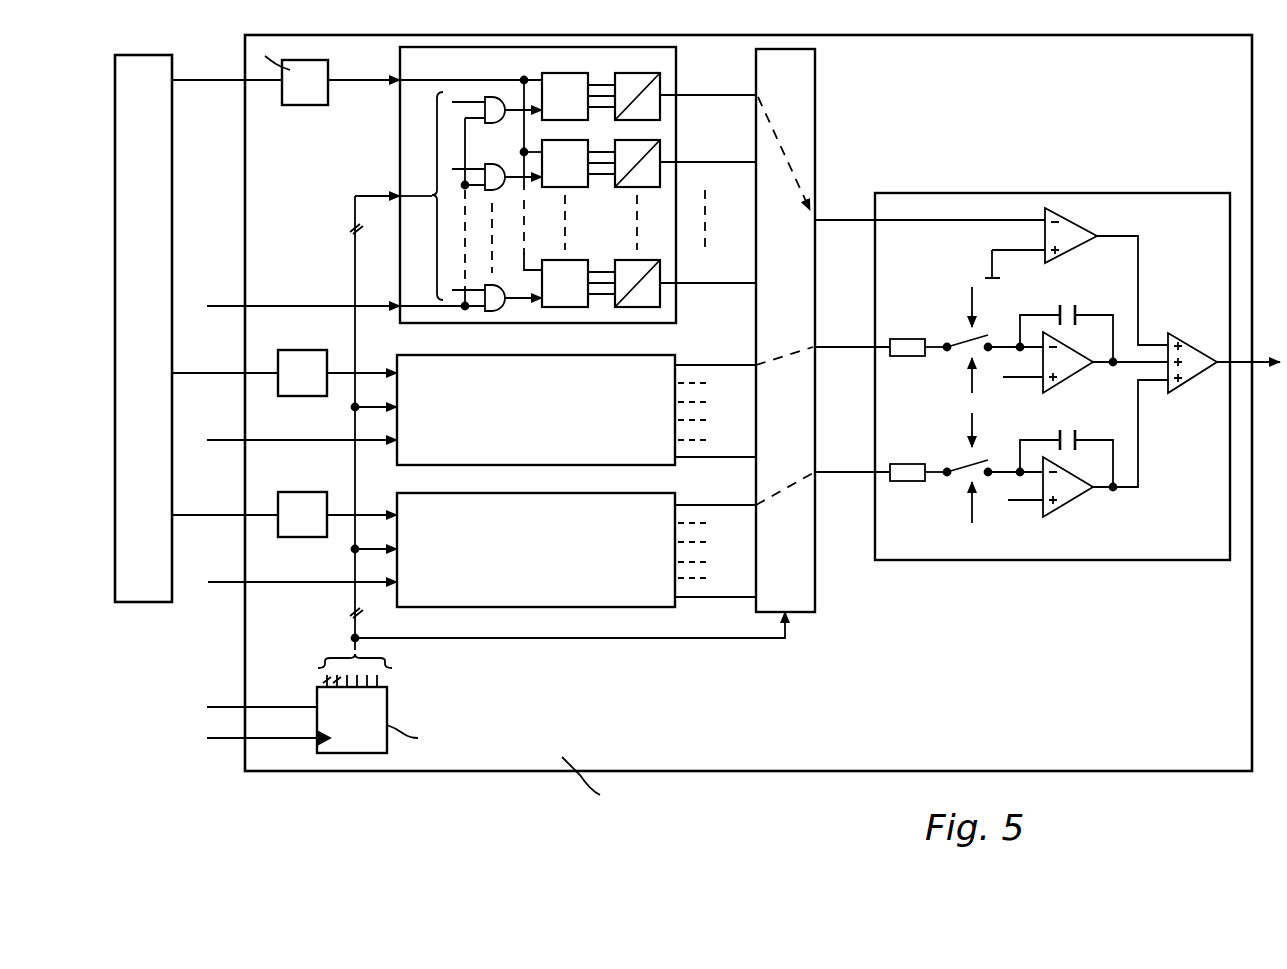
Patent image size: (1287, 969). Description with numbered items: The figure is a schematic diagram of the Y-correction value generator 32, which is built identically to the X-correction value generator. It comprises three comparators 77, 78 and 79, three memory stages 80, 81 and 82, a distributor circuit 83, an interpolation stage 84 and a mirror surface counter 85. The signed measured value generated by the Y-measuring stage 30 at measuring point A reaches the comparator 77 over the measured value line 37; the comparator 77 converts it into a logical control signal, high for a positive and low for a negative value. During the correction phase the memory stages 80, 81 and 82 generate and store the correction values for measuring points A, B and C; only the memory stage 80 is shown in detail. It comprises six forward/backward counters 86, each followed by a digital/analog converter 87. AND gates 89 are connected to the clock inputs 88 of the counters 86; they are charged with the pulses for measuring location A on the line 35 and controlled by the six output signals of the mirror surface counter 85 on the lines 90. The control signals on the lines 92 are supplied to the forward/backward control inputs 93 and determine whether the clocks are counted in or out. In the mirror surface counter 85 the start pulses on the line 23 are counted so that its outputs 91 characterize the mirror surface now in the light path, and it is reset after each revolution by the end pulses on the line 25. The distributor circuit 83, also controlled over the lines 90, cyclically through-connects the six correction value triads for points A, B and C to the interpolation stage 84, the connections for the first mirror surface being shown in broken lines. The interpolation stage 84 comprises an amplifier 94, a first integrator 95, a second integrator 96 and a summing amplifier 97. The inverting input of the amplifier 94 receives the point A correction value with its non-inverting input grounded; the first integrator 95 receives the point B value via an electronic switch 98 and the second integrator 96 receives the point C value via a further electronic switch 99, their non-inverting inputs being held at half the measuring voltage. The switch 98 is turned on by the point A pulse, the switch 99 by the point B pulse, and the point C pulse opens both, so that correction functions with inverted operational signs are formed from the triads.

The line 23 is at (222, 738).
The line 25 is at (222, 709).
The Y-measuring stage 30 is at (142, 604).
The Y-correction value generator 32 is at (247, 632).
The line 35 is at (312, 304).
The Y measured value line 37 is at (225, 82).
The comparator 77 is at (305, 90).
The comparator 78 is at (300, 362).
The comparator 79 is at (297, 504).
The memory stage 80 is at (402, 165).
The memory stage 81 is at (418, 456).
The memory stage 82 is at (430, 600).
The distributor circuit 83 is at (805, 110).
The interpolation stage 84 is at (1180, 210).
The mirror surface counter 85 is at (395, 716).
The forward/backward counter 86 is at (546, 82).
The digital/analog converter 87 is at (630, 84).
The clock input 88 is at (538, 116).
The AND gate 89 is at (488, 114).
The line 90 is at (352, 638).
The output 91 is at (327, 680).
The line 92 is at (348, 82).
The forward/backward control input 93 is at (542, 268).
The amplifier 94 is at (1078, 228).
The first integrator 95 is at (1074, 368).
The second integrator 96 is at (1066, 498).
The summing amplifier 97 is at (1192, 372).
The electronic switch 98 is at (962, 338).
The electronic switch 99 is at (964, 466).